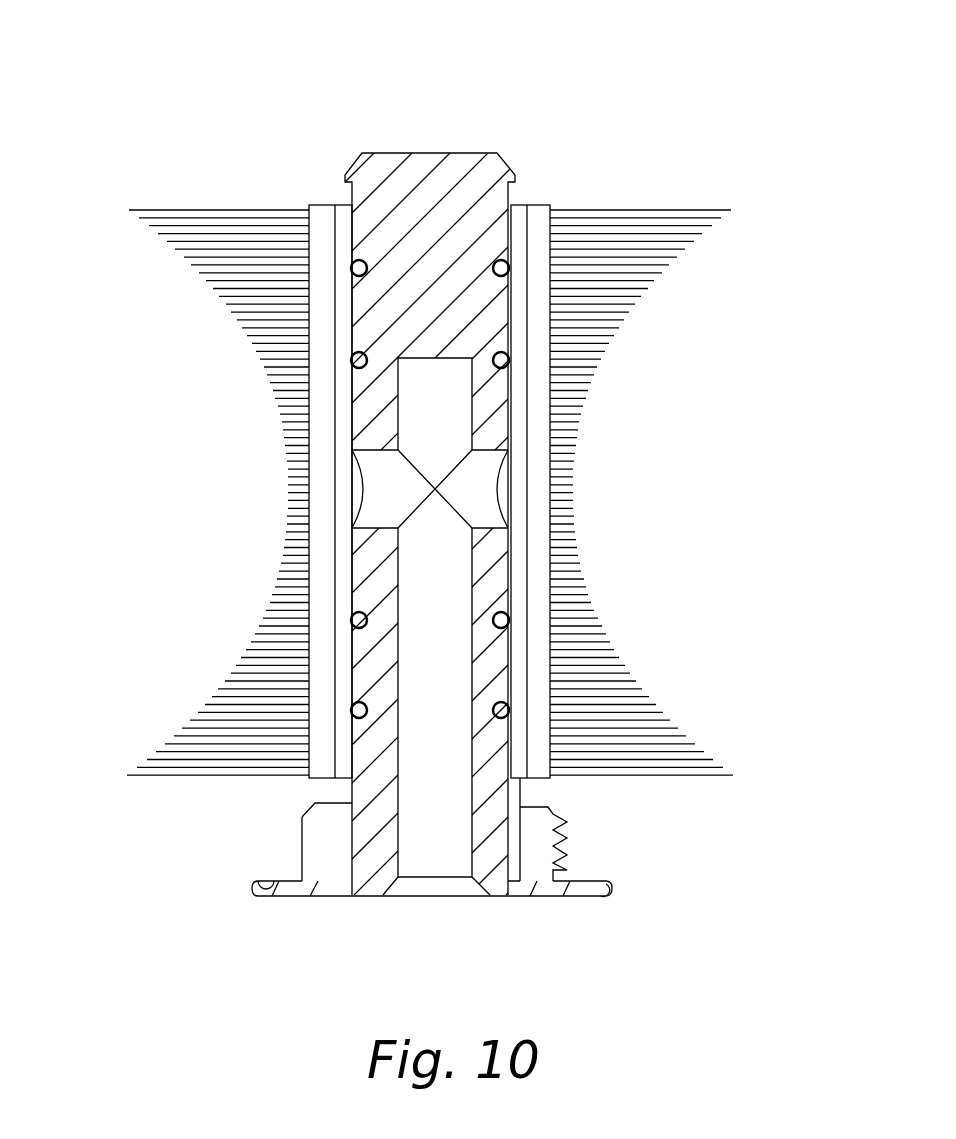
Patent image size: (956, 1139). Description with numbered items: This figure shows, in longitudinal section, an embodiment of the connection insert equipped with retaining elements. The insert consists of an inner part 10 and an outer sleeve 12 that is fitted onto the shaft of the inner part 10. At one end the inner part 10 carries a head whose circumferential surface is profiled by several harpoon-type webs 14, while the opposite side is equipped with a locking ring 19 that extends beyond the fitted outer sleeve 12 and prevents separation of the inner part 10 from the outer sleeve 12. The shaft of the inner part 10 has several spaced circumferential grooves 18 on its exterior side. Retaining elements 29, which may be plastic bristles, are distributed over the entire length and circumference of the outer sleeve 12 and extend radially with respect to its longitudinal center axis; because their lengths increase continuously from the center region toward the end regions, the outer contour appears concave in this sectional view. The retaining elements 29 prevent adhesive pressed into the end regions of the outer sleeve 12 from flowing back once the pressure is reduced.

The inner part 10 is at (433, 213).
The locking ring 19 is at (360, 153).
The outer sleeve 12 is at (536, 267).
The circumferential grooves 18 is at (352, 710).
The retaining elements 29 is at (797, 190).
The harpoon-type webs 14 is at (307, 866).